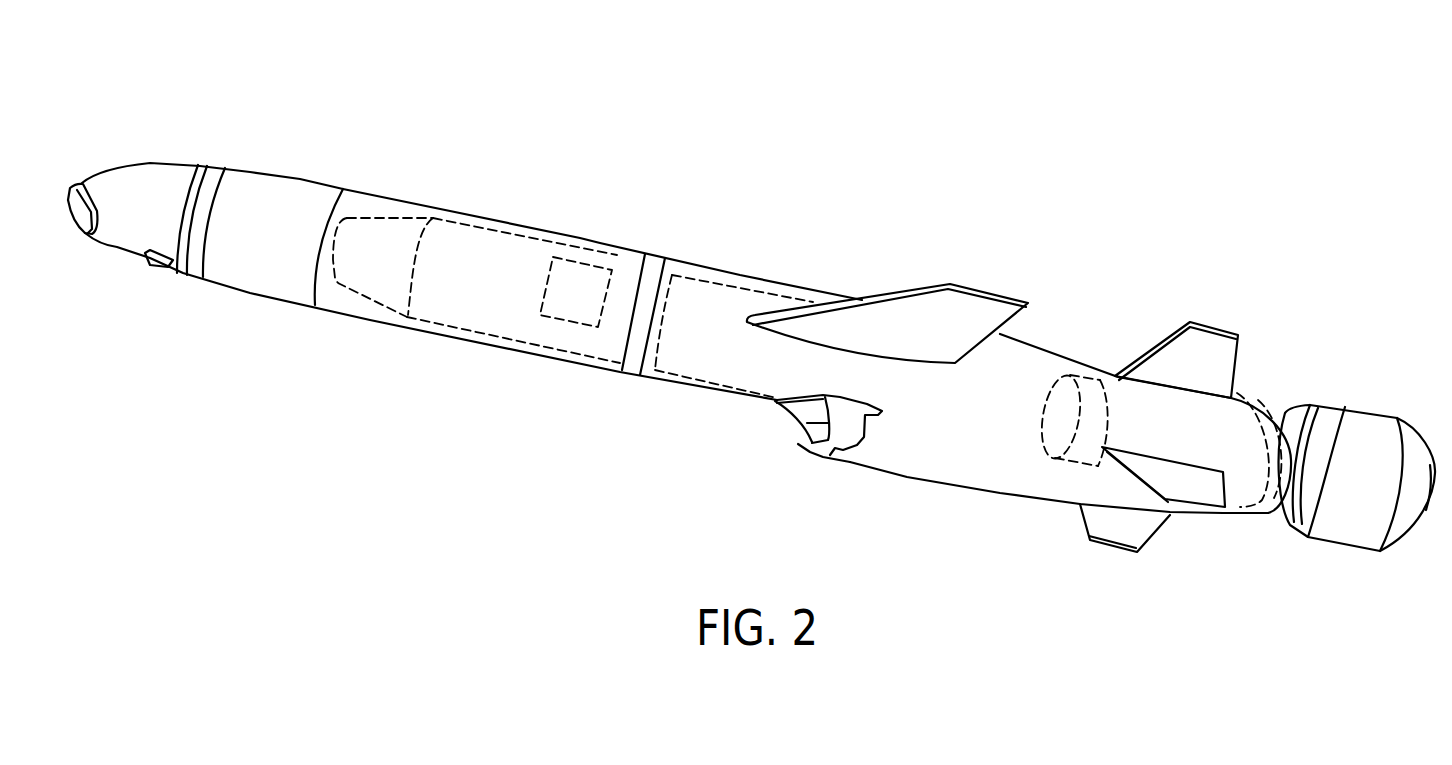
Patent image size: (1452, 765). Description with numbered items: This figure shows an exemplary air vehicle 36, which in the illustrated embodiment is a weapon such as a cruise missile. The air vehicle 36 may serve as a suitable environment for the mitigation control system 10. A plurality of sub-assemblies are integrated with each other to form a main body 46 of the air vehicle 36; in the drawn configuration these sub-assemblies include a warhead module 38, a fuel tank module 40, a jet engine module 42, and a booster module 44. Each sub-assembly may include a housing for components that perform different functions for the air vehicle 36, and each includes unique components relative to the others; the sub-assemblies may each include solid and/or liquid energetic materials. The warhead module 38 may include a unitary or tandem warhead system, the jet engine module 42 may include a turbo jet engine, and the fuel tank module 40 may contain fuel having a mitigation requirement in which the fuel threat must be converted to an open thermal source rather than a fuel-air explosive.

The mitigation control system 10 is at (607, 291).
The air vehicle 36 is at (160, 127).
The warhead module 38 is at (497, 337).
The fuel tank module 40 is at (697, 380).
The jet engine module 42 is at (1233, 483).
The booster module 44 is at (1357, 518).
The main body 46 is at (592, 226).